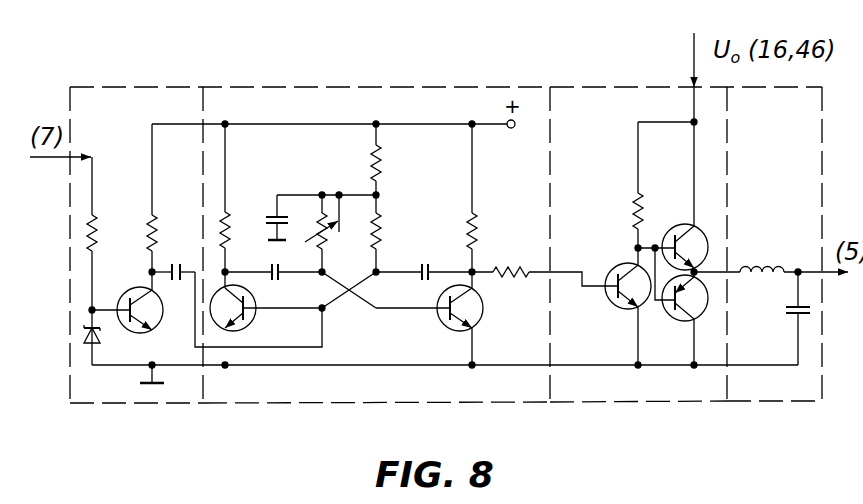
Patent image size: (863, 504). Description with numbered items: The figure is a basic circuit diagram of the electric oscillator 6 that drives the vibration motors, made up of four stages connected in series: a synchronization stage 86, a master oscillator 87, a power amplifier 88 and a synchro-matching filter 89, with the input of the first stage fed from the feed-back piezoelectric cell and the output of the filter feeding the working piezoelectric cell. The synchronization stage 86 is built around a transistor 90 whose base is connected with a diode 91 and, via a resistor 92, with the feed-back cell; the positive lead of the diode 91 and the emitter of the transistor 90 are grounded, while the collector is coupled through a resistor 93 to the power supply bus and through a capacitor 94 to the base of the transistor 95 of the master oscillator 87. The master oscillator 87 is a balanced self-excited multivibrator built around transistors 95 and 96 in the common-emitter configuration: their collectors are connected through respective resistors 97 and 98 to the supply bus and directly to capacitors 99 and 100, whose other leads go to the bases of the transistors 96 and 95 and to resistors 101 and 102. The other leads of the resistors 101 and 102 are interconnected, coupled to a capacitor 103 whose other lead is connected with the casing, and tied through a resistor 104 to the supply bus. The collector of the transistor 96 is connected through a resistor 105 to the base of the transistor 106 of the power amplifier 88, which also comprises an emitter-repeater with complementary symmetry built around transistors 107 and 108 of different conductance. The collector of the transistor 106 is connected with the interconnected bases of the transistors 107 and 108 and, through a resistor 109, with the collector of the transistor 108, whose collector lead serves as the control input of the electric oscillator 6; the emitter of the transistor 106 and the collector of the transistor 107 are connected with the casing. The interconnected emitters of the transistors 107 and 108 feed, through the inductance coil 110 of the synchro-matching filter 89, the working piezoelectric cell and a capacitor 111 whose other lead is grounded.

The electric oscillator 6 is at (405, 83).
The synchronization stage 86 is at (151, 405).
The master oscillator 87 is at (299, 404).
The power amplifier 88 is at (665, 404).
The synchro-matching filter 89 is at (757, 404).
The transistor 90 is at (160, 326).
The diode 91 is at (99, 338).
The resistor 92 is at (97, 222).
The resistor 93 is at (156, 222).
The capacitor 94 is at (178, 262).
The transistor 95 is at (254, 318).
The transistor 96 is at (481, 316).
The resistor 97 is at (229, 246).
The resistor 98 is at (478, 226).
The capacitor 99 is at (281, 278).
The capacitor 100 is at (434, 250).
The resistor 101 is at (330, 250).
The resistor 102 is at (383, 224).
The capacitor 103 is at (273, 210).
The resistor 104 is at (382, 158).
The resistor 105 is at (500, 266).
The transistor 106 is at (612, 306).
The transistor 107 is at (673, 319).
The transistor 108 is at (668, 227).
The resistor 109 is at (632, 216).
The inductance coil 110 is at (761, 266).
The capacitor 111 is at (797, 318).